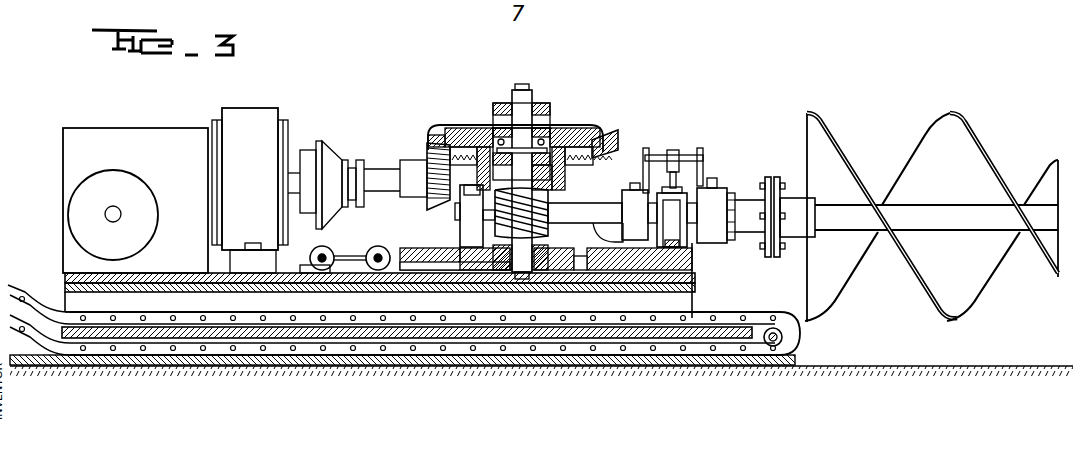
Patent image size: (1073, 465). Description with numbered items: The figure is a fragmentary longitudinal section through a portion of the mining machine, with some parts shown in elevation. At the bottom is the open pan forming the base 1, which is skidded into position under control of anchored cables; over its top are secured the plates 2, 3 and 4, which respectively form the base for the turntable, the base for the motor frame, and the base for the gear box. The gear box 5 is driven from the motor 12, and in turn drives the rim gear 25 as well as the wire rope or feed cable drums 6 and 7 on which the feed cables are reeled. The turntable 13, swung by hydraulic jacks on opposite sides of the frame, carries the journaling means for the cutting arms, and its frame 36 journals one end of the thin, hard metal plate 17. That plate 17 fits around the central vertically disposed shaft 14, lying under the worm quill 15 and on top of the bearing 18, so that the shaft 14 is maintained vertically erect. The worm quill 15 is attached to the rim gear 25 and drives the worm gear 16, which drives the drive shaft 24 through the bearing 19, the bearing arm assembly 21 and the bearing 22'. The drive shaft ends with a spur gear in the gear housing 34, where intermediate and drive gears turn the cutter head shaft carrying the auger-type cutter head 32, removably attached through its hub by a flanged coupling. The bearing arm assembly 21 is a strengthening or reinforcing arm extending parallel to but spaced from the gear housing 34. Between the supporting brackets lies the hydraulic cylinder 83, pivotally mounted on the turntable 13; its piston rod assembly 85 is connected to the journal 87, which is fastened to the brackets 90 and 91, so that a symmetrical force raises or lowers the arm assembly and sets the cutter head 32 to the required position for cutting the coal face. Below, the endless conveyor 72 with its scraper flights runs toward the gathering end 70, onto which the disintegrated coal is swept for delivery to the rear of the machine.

The base 1 is at (362, 308).
The plate 2 is at (450, 297).
The plate 3 is at (247, 278).
The plate 4 is at (155, 273).
The gear box 5 is at (141, 134).
The feed cable drum 6 is at (140, 197).
The feed cable drum 7 is at (357, 185).
The motor 12 is at (247, 125).
The turntable 13 is at (623, 280).
The central vertically disposed shaft 14 is at (525, 120).
The worm quill 15 is at (570, 127).
The worm gear 16 is at (450, 127).
The thin hard metal plate 17 is at (553, 247).
The bearing 18 is at (500, 273).
The bearing 19 is at (453, 232).
The bearing arm assembly 21 is at (632, 198).
The bearing 22' is at (523, 278).
The drive shaft 24 is at (570, 212).
The rim gear 25 is at (613, 138).
The cutter head 32 is at (976, 108).
The gear housing 34 is at (733, 188).
The frame of the turntable 36 is at (500, 102).
The gathering end of the conveyor 70 is at (797, 339).
The endless conveyor 72 is at (762, 322).
The hydraulic cylinder 83 is at (688, 248).
The piston rod assembly 85 is at (668, 150).
The journal 87 is at (692, 156).
The bracket 90 is at (698, 177).
The bracket 91 is at (647, 148).